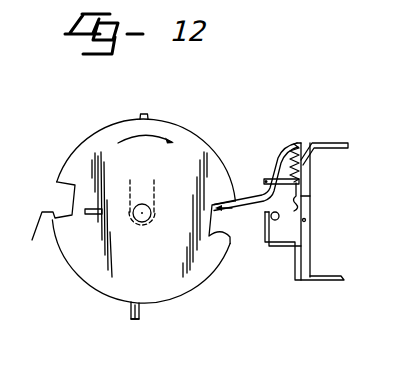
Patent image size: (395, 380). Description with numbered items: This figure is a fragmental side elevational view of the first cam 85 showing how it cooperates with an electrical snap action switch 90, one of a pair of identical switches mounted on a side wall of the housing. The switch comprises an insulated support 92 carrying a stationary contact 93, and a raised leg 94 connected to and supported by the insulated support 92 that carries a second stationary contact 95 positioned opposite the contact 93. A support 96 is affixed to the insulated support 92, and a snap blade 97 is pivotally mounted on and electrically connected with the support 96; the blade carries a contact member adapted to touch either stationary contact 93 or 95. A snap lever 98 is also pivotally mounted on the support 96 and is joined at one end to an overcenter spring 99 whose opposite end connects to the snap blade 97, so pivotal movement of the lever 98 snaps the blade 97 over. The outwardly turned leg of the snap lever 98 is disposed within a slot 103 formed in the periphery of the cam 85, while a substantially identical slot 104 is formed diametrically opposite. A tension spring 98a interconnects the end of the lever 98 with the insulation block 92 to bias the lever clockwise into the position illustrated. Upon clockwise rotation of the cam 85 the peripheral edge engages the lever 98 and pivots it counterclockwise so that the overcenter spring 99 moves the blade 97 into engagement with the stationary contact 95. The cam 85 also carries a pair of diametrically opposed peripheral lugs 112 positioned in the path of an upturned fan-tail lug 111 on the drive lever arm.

The cam 85 is at (157, 273).
The snap action switch 90 is at (330, 257).
The insulated support 92 is at (305, 205).
The stationary contact 93 is at (303, 220).
The raised leg 94 is at (265, 243).
The stationary contact 95 is at (273, 221).
The support 96 is at (303, 174).
The snap blade 97 is at (307, 198).
The snap lever 98 is at (273, 162).
The tension spring 98a is at (299, 143).
The overcenter spring 99 is at (288, 168).
The slot 103 is at (233, 241).
The slot 104 is at (46, 221).
The fan-tail lug 111 is at (131, 323).
The peripheral lugs 112 is at (150, 116).